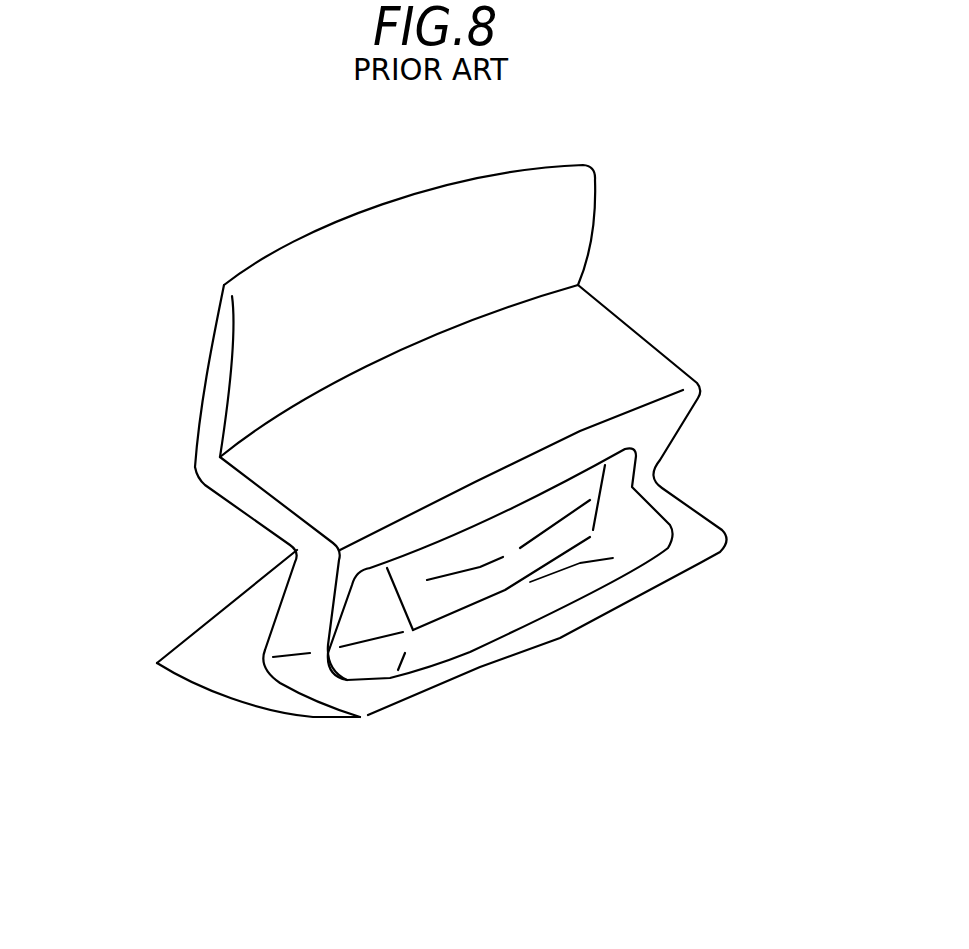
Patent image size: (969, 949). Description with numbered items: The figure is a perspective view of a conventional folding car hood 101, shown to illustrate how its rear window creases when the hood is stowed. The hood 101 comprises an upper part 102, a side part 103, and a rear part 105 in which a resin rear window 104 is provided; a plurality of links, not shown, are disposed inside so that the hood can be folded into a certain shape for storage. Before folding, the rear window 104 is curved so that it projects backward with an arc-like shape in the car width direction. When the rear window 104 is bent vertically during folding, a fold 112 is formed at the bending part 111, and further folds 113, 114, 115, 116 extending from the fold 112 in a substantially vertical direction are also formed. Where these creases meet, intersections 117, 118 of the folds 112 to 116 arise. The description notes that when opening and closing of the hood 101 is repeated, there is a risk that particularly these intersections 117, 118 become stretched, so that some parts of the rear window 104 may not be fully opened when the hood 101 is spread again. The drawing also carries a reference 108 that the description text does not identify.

The hood 101 is at (135, 287).
The upper part 102 is at (620, 243).
The side part 103 is at (217, 654).
The rear window 104 is at (549, 594).
The rear part 105 is at (723, 507).
The back surface 108 is at (463, 361).
The bending part 111 is at (513, 610).
The fold 112 is at (465, 608).
The fold 113 is at (400, 602).
The fold 114 is at (405, 660).
The fold 115 is at (600, 480).
The fold 116 is at (613, 553).
The intersection 117 is at (422, 652).
The intersection 118 is at (599, 552).